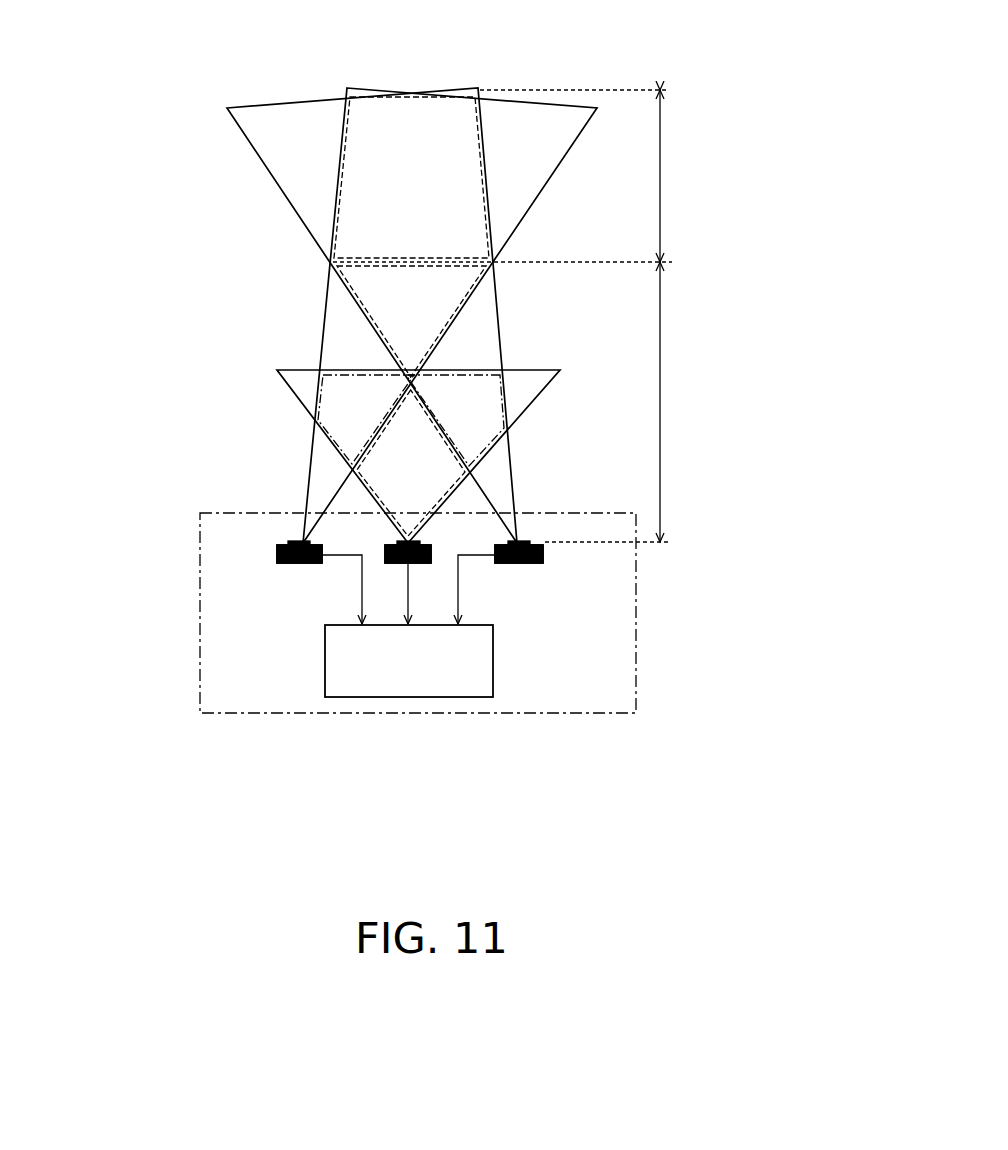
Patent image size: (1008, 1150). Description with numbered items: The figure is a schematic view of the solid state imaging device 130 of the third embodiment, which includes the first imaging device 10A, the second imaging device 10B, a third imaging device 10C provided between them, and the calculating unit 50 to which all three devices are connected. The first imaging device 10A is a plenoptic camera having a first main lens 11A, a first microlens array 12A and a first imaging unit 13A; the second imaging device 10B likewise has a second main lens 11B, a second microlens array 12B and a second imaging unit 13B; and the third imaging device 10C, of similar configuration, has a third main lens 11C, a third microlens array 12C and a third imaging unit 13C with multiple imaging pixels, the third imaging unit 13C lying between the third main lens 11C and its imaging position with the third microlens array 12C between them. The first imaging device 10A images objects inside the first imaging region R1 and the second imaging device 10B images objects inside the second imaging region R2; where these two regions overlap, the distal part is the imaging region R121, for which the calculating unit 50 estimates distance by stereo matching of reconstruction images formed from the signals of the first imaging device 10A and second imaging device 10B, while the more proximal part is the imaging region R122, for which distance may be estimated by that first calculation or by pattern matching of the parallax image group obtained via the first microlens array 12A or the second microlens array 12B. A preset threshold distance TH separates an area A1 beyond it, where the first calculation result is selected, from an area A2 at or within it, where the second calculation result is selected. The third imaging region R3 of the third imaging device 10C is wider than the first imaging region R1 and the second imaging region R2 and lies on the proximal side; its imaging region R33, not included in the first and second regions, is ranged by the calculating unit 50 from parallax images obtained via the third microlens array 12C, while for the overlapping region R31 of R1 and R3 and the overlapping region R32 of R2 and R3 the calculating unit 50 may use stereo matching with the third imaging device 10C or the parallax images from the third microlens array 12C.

The first imaging region R1 is at (322, 317).
The second imaging region R2 is at (495, 315).
The third imaging region R3 is at (280, 386).
The imaging region R121 is at (348, 87).
The imaging region R122 is at (332, 292).
The overlapping region R31 is at (313, 432).
The overlapping region R32 is at (488, 452).
The imaging region R33 is at (357, 483).
The area A1 is at (661, 170).
The area A2 is at (661, 420).
The distance TH is at (677, 261).
The first imaging device 10A is at (272, 556).
The second imaging device 10B is at (553, 558).
The third imaging device 10C is at (379, 567).
The first main lens 11A is at (285, 563).
The first microlens array 12A is at (285, 563).
The first imaging unit 13A is at (285, 563).
The second main lens 11B is at (527, 563).
The second microlens array 12B is at (527, 563).
The second imaging unit 13B is at (527, 563).
The third main lens 11C is at (422, 563).
The third microlens array 12C is at (422, 563).
The third imaging unit 13C is at (422, 563).
The calculating unit 50 is at (413, 697).
The solid state imaging device 130 is at (637, 707).